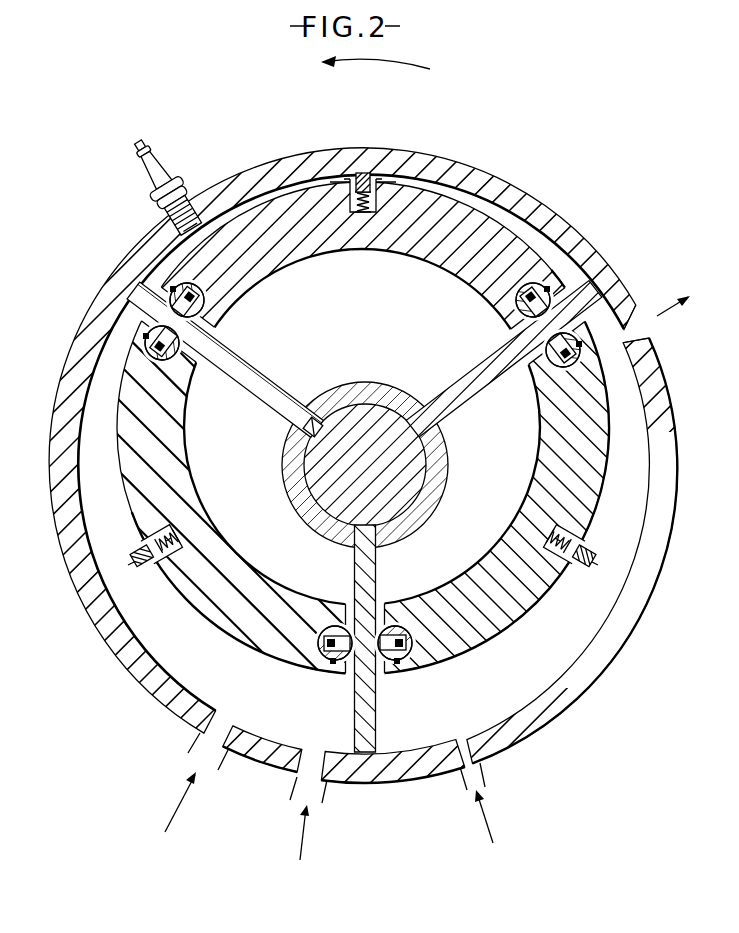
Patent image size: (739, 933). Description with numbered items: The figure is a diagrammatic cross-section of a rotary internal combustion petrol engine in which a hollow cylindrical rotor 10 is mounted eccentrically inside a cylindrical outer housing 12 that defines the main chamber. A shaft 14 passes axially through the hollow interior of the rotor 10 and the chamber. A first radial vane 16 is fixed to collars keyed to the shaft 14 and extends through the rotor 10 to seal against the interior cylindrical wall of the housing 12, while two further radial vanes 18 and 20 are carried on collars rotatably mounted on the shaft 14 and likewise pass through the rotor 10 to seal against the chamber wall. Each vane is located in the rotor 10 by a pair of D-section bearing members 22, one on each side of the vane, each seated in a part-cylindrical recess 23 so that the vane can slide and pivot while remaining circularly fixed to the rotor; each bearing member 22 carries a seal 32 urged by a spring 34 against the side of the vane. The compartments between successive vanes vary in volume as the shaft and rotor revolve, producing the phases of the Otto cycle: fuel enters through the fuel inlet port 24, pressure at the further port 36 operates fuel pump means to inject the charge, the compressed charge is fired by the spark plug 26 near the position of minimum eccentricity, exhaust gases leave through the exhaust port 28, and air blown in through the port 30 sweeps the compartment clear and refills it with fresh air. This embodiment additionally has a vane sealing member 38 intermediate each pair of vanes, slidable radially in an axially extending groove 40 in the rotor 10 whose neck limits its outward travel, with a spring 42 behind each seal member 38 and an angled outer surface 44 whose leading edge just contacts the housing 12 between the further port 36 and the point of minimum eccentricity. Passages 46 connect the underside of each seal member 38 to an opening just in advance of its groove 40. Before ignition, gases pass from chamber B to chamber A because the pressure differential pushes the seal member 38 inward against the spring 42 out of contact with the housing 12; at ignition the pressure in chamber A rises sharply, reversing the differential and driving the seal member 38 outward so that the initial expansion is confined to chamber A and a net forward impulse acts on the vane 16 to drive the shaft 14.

The rotor 10 is at (500, 243).
The outer housing 12 is at (662, 471).
The shaft 14 is at (420, 469).
The first radial vane 16 is at (272, 388).
The radial vane 18 is at (450, 395).
The radial vane 20 is at (376, 548).
The bearing member 22 is at (180, 290).
The part-cylindrical recess 23 is at (203, 310).
The fuel inlet port 24 is at (475, 746).
The spark plug 26 is at (166, 168).
The exhaust port 28 is at (206, 735).
The air port 30 is at (325, 770).
The seal 32 is at (205, 320).
The spring 34 is at (204, 300).
The further port 36 is at (640, 331).
The vane sealing member 38 is at (380, 180).
The axially extending groove 40 is at (374, 196).
The spring 42 is at (360, 212).
The angled outer surface 44 is at (360, 173).
The passage 46 is at (336, 200).
The chamber A is at (253, 188).
The chamber B is at (494, 196).